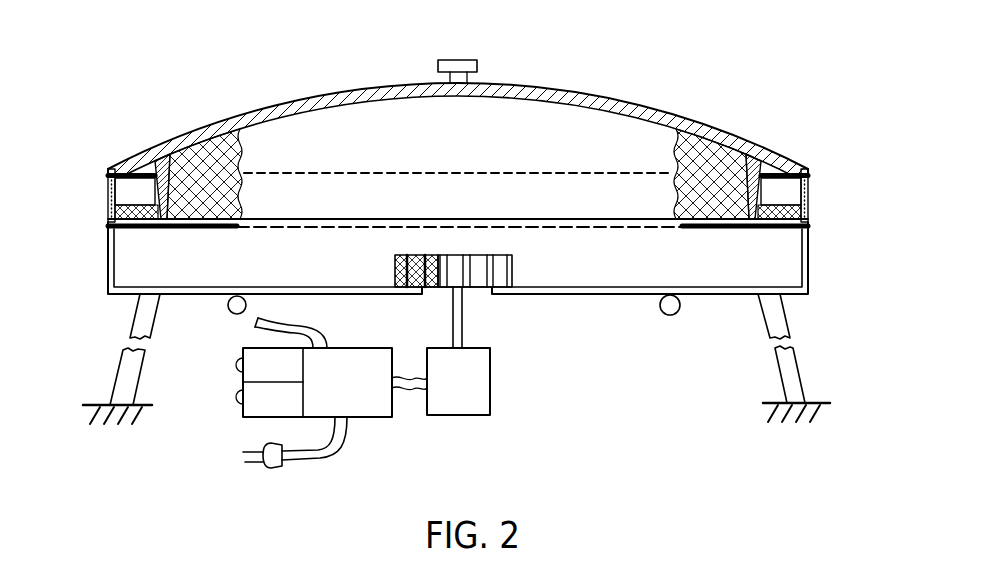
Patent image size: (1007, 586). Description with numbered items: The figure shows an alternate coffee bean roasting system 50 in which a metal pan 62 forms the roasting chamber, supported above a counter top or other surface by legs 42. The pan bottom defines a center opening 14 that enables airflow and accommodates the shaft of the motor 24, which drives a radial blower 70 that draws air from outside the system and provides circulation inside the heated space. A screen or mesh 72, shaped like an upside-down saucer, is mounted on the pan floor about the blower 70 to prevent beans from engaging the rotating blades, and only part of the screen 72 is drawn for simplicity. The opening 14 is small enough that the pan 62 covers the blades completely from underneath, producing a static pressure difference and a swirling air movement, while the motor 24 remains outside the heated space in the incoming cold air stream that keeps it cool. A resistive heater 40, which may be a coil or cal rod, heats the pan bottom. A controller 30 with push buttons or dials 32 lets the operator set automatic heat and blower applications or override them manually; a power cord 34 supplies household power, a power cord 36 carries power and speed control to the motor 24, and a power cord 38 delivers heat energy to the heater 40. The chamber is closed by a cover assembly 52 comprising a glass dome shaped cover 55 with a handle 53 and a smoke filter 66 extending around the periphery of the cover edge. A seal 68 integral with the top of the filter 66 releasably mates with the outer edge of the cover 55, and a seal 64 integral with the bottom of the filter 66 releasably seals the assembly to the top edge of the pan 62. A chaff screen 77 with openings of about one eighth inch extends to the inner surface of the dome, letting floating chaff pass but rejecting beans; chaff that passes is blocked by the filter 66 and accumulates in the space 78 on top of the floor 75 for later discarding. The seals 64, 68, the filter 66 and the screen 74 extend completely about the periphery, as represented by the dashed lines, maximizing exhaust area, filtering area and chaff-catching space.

The center opening 14 is at (475, 292).
The motor 24 is at (490, 390).
The controller 30 is at (365, 422).
The push buttons or dials 32 is at (243, 364).
The power cord 34 is at (308, 459).
The power cord 36 is at (407, 391).
The power cord 38 is at (318, 333).
The resistive heater 40 is at (662, 315).
The legs 42 is at (792, 372).
The alternate system 50 is at (597, 68).
The cover assembly 52 is at (273, 103).
The handle 53 is at (445, 60).
The glass dome shaped cover 55 is at (355, 90).
The metal pan 62 is at (808, 262).
The seal 64 is at (197, 229).
The smoke filter 66 is at (110, 188).
The seal 68 is at (772, 175).
The radial blower 70 is at (512, 273).
The screen or mesh 72 is at (395, 267).
The screen 74 is at (712, 143).
The floor 75 is at (783, 203).
The chaff screen 77 is at (755, 160).
The space 78 is at (123, 192).